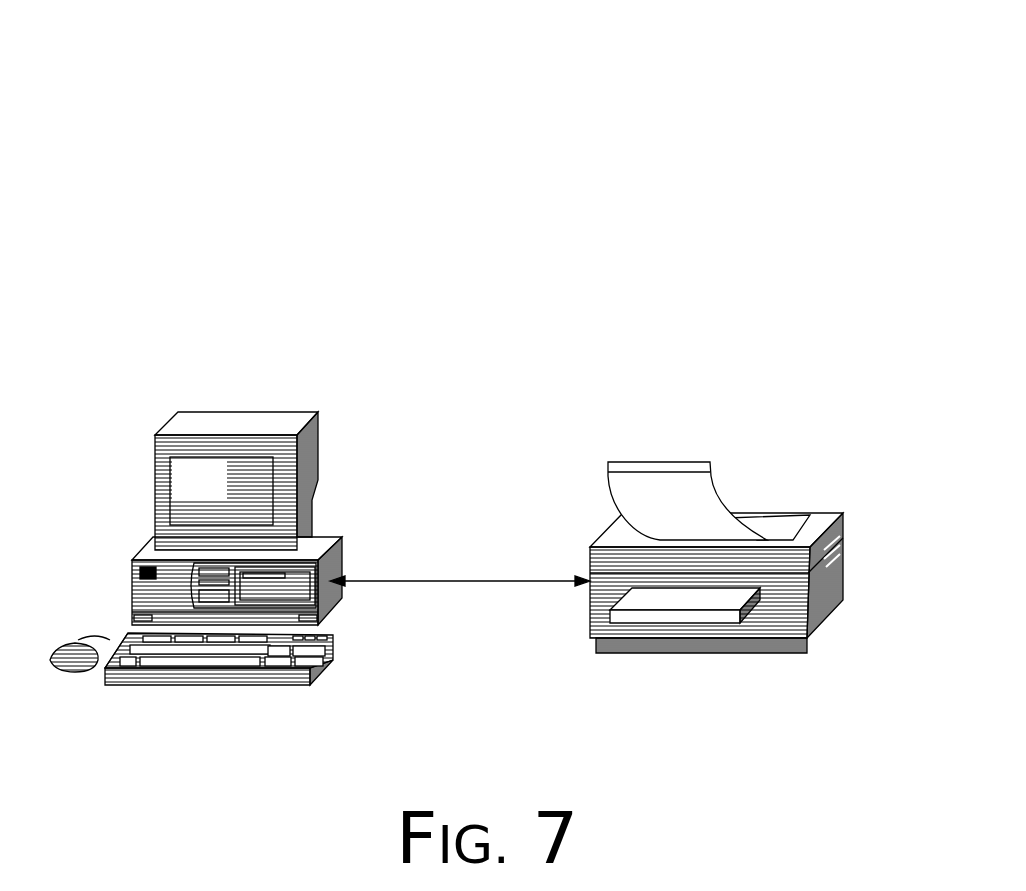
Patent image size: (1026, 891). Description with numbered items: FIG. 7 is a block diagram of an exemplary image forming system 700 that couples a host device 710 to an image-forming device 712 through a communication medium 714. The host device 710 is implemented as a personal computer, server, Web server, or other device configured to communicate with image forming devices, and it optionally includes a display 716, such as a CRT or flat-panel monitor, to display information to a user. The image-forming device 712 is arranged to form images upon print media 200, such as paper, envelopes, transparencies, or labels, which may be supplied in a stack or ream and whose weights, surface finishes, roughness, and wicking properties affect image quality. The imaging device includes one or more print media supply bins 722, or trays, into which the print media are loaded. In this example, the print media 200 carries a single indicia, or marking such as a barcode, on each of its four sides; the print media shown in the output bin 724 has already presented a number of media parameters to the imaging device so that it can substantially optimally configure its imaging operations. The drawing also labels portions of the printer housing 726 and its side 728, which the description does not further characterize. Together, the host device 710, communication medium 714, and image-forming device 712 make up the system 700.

The image forming system 700 is at (193, 60).
The host device 710 is at (132, 562).
The display 716 is at (237, 426).
The communication medium 714 is at (472, 580).
The image-forming device 712 is at (719, 545).
The print media 200 is at (650, 467).
The output bin 724 is at (778, 532).
The printer housing 726 is at (613, 557).
The side vent 728 is at (803, 563).
The print media supply bins 722 is at (658, 620).